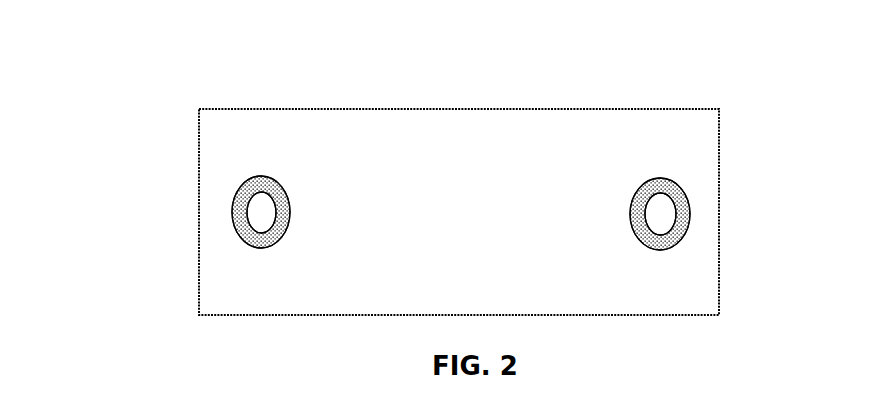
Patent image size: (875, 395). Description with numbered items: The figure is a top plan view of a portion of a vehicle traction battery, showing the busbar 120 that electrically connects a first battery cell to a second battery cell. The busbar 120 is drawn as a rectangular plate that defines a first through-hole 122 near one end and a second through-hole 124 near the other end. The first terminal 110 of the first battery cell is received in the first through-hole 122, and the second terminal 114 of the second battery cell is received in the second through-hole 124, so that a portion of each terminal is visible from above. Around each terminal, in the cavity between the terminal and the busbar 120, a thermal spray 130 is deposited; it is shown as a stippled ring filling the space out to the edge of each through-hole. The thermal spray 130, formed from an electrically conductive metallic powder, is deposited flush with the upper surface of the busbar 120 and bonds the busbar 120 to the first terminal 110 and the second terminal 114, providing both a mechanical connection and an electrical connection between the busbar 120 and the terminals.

The first terminal 110 is at (260, 217).
The second terminal 114 is at (663, 213).
The busbar 120 is at (578, 107).
The first through-hole 122 is at (258, 176).
The second through-hole 124 is at (653, 178).
The thermal spray 130 is at (232, 197).